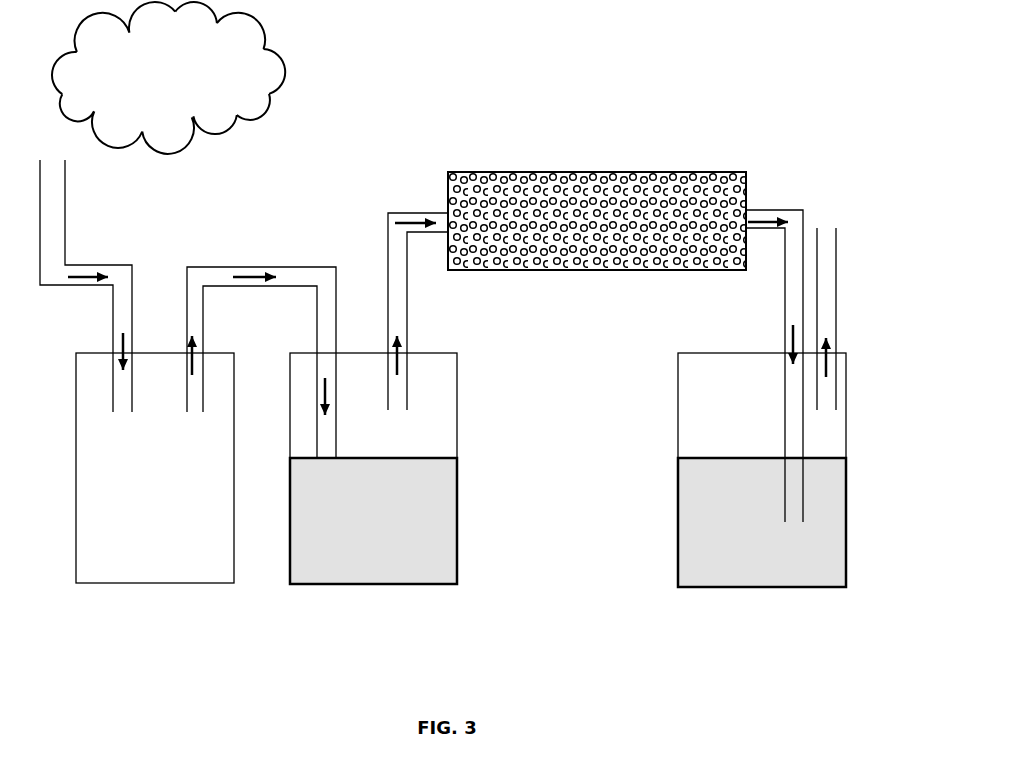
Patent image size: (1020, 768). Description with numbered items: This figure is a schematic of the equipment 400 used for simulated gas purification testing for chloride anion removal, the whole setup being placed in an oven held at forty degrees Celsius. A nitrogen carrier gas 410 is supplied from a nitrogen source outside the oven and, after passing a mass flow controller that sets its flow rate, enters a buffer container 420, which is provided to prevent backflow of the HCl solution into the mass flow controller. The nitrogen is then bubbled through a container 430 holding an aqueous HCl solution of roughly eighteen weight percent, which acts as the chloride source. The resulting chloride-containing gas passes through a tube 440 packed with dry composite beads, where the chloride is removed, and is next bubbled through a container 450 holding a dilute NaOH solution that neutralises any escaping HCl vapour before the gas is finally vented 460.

The equipment 400 is at (727, 34).
The nitrogen carrier gas 410 is at (52, 207).
The buffer container 420 is at (153, 388).
The container containing aqueous HCl solution 430 is at (363, 542).
The tube containing dry composite beads 440 is at (487, 170).
The container containing NaOH solution 450 is at (713, 507).
The vent 460 is at (827, 221).